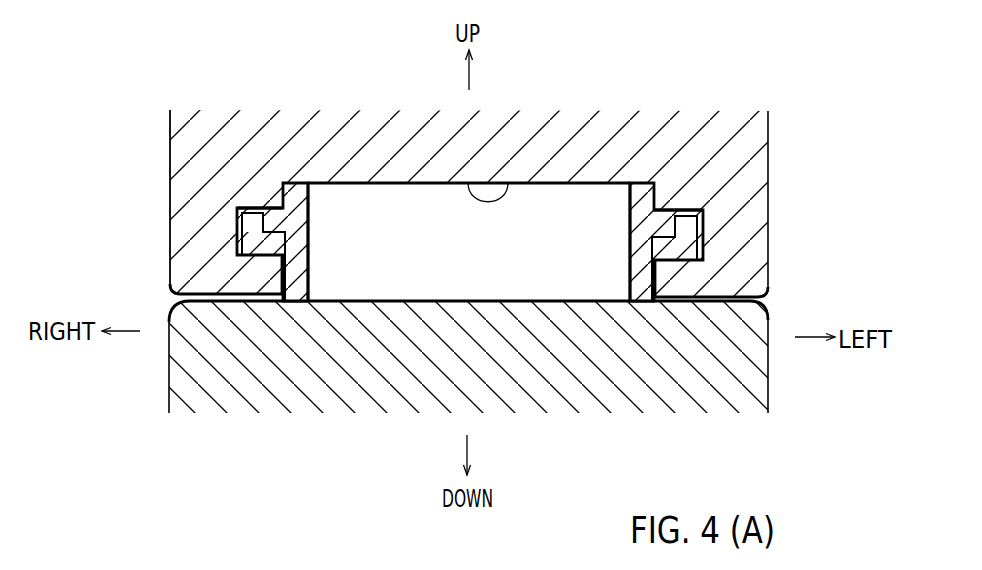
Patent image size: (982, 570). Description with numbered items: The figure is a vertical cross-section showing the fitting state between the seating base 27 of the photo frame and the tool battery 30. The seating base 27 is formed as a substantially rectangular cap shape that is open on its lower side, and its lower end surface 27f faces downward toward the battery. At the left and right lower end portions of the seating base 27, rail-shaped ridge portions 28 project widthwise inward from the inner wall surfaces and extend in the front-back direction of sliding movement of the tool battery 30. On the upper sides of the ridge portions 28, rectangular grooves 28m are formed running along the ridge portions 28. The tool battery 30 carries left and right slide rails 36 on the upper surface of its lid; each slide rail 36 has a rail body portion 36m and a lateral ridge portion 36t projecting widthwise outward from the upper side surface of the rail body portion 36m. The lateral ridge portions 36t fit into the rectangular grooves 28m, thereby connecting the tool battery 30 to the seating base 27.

The seating base 27 is at (740, 113).
The lower end surface 27f is at (508, 183).
The ridge portion 28 is at (255, 284).
The rectangular groove 28m is at (238, 222).
The tool battery 30 is at (774, 393).
The slide rail 36 is at (314, 267).
The rail body portion 36m is at (294, 236).
The lateral ridge portion 36t is at (247, 251).